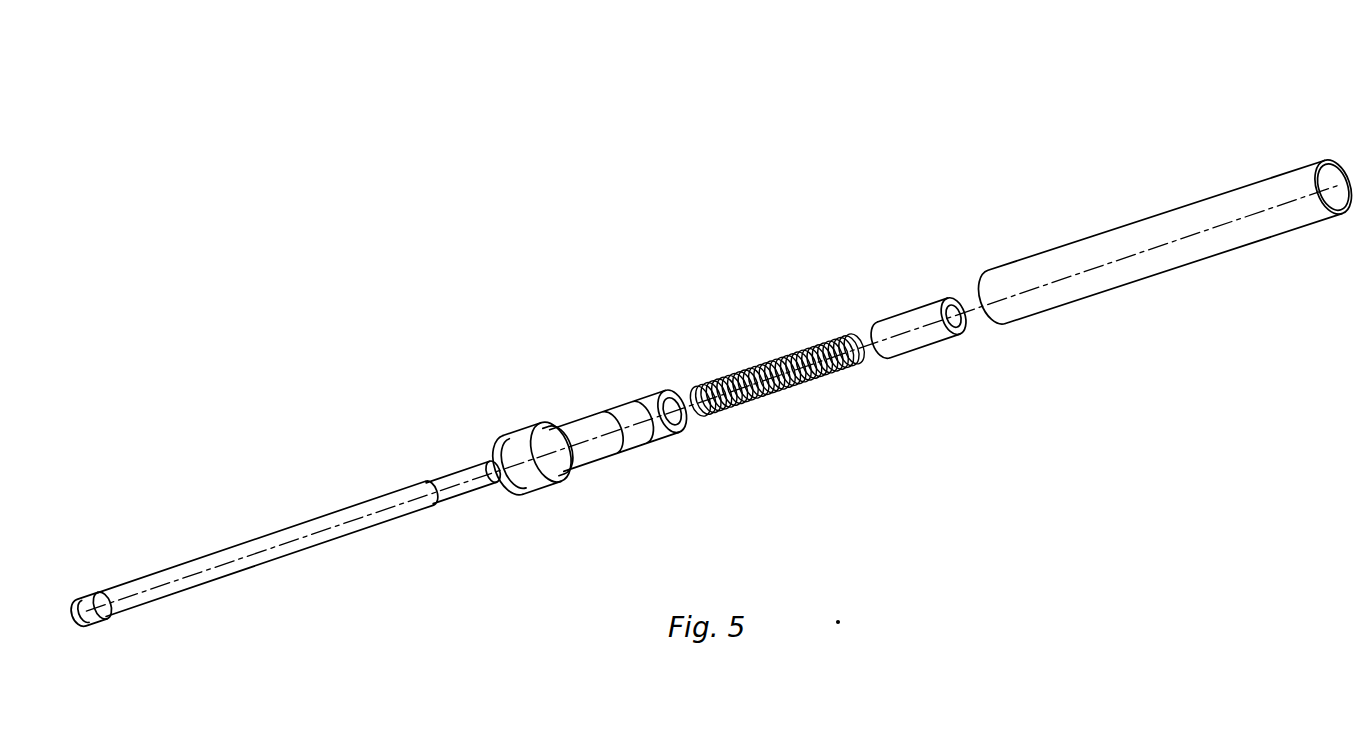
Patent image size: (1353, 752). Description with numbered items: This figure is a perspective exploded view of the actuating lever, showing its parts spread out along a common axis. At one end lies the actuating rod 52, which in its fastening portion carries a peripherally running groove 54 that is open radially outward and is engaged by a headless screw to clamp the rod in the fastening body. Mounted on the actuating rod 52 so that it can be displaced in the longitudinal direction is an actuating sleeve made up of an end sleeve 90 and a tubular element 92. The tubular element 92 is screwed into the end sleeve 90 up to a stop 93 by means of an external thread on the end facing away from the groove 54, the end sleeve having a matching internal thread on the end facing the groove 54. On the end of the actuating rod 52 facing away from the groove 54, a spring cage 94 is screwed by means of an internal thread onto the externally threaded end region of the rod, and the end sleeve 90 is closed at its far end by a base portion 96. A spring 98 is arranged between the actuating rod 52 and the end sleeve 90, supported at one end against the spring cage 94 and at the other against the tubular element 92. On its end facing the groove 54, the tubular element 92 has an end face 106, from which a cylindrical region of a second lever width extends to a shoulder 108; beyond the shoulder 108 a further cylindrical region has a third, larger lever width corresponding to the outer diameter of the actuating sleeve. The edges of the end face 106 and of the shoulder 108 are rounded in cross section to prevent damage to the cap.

The actuating rod 52 is at (300, 550).
The groove 54 is at (108, 612).
The end sleeve 90 is at (1157, 277).
The tubular element 92 is at (590, 410).
The stop 93 is at (580, 471).
The spring cage 94 is at (940, 342).
The base portion 96 is at (1340, 178).
The spring 98 is at (780, 350).
The end face 106 is at (507, 455).
The shoulder 108 is at (510, 457).